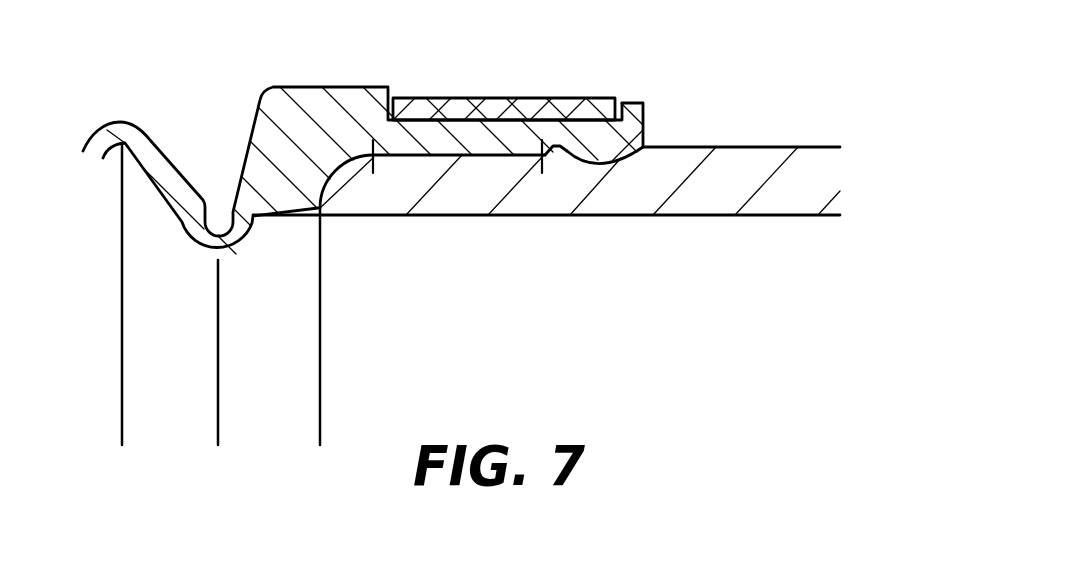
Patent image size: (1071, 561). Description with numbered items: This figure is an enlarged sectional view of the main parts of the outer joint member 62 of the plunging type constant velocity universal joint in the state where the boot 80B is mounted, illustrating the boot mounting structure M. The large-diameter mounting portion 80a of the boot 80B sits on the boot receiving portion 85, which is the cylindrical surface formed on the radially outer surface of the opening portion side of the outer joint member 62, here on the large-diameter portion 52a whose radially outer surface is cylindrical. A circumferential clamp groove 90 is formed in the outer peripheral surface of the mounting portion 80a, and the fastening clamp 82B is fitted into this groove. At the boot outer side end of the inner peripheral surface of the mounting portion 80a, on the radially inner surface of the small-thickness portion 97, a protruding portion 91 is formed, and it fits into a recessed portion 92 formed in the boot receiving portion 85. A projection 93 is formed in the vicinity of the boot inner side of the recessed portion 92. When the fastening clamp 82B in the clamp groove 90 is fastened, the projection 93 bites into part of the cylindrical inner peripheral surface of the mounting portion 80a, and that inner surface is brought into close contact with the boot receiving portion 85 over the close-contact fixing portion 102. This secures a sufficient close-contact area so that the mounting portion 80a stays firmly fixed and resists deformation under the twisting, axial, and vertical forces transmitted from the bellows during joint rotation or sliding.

The boot 80B is at (310, 86).
The large-diameter mounting portion 80a is at (428, 135).
The fastening clamp 82B is at (519, 97).
The large-diameter portion 52a is at (473, 170).
The projection 93 is at (555, 142).
The clamp groove 90 is at (590, 122).
The recessed portion 92 is at (612, 156).
The outer joint member 62 is at (748, 145).
The small-thickness portion 97 is at (393, 137).
The boot receiving portion 85 is at (490, 153).
The protruding portion 91 is at (598, 152).
The close-contact fixing portion 102 is at (542, 188).
The boot mounting structure M is at (637, 85).